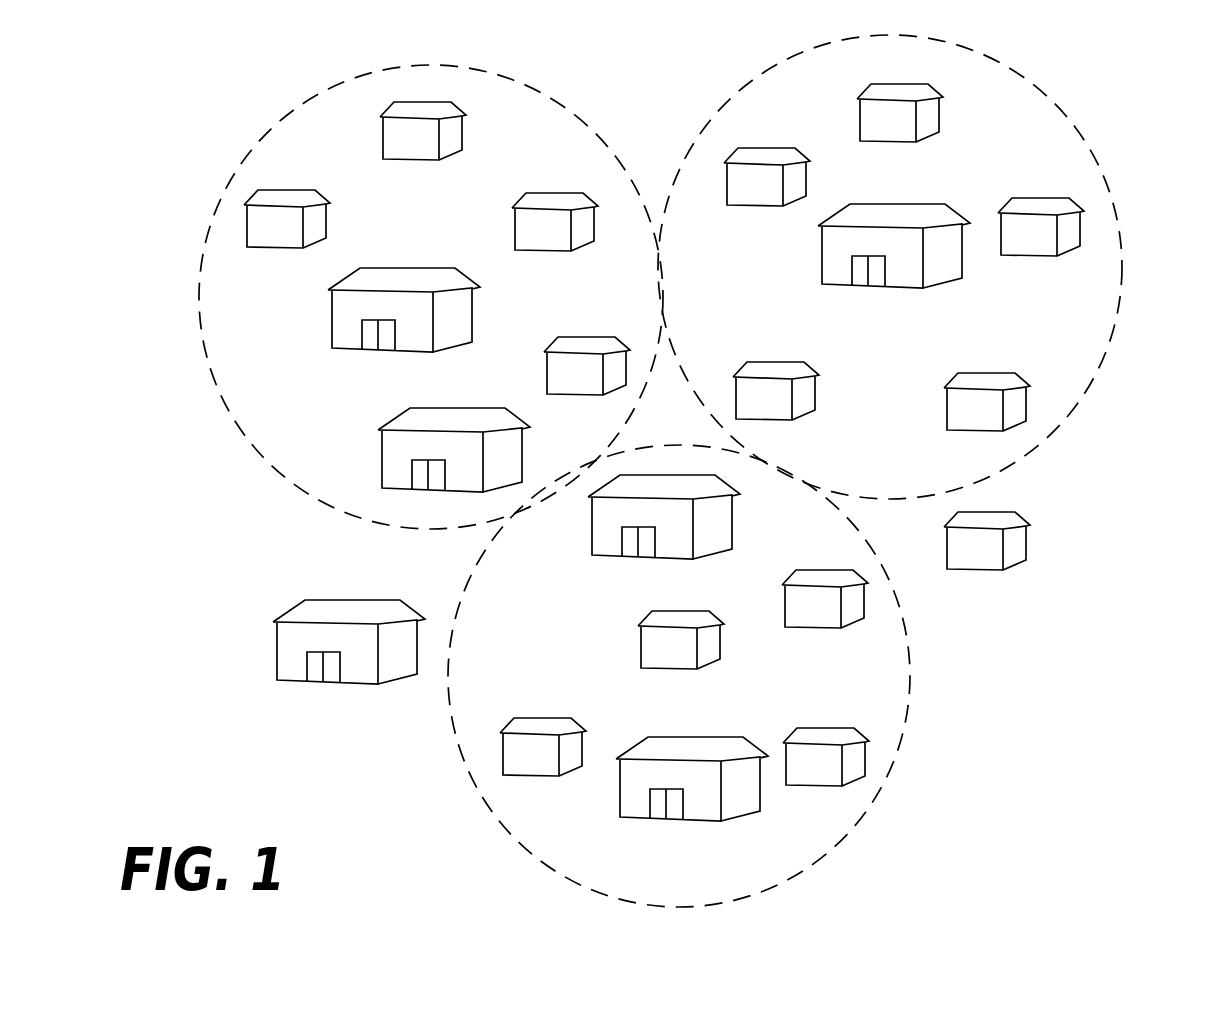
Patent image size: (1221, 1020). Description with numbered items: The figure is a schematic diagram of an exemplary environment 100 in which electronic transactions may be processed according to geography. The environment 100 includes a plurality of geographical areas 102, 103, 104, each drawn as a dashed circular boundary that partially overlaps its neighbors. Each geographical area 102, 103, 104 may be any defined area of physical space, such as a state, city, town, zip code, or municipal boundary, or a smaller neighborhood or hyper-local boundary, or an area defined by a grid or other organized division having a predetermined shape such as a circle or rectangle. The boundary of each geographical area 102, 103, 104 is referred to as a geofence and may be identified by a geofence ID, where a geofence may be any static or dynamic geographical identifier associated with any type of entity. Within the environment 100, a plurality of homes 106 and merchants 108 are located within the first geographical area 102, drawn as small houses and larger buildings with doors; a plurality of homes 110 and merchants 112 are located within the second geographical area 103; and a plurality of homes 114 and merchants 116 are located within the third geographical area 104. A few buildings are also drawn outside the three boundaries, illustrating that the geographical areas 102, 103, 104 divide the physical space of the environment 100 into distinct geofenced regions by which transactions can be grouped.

The environment 100 is at (982, 806).
The geographical area 102 is at (277, 128).
The geographical area 103 is at (1121, 234).
The geographical area 104 is at (907, 641).
The homes 106 is at (462, 147).
The merchants 108 is at (353, 349).
The homes 110 is at (769, 145).
The merchants 112 is at (937, 285).
The homes 114 is at (641, 659).
The merchants 116 is at (605, 556).